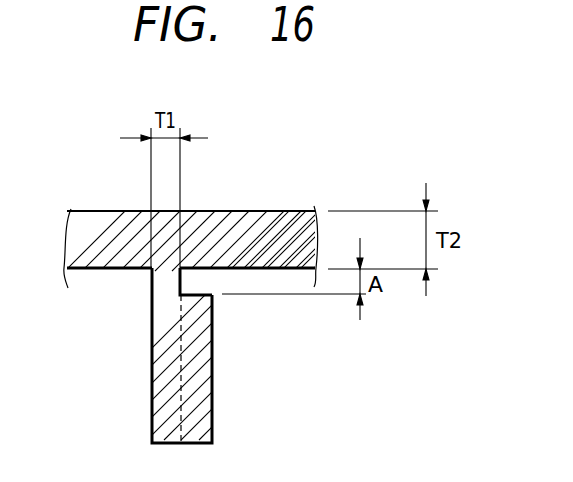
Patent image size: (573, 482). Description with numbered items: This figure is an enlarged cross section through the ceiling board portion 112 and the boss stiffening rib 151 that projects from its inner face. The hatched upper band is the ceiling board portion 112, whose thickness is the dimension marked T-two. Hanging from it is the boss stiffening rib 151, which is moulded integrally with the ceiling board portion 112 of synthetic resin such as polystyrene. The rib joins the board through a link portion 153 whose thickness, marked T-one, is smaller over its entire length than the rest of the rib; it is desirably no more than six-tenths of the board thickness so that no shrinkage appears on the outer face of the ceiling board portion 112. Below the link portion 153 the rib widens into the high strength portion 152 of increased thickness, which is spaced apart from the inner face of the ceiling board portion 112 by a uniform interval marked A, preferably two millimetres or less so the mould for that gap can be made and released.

The ceiling board portion 112 is at (255, 211).
The link portion 153 is at (162, 286).
The boss stiffening rib 151 is at (152, 389).
The high strength portion 152 is at (207, 403).